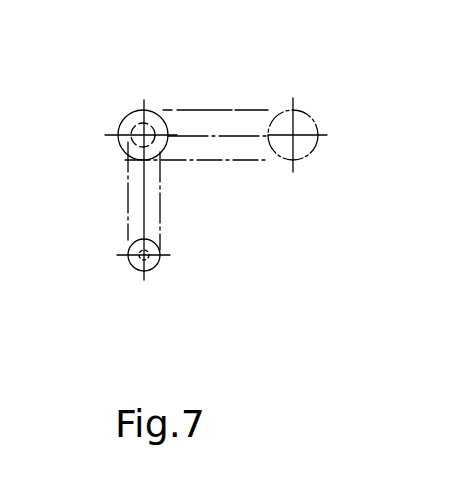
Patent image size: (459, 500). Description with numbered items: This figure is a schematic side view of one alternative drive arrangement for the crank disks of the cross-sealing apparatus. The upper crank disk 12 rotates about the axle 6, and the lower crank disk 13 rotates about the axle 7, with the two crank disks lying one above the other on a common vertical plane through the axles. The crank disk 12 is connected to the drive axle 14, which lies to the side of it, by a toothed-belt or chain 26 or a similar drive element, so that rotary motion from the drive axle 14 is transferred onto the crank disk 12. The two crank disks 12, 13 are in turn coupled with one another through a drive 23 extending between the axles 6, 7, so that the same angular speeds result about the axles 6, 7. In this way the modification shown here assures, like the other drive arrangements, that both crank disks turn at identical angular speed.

The axle 6 is at (150, 114).
The crank disk 12 is at (135, 128).
The toothed-belt or chain 26 is at (220, 108).
The drive axle 14 is at (295, 135).
The drive 23 is at (127, 204).
The crank disk 13 is at (131, 263).
The axle 7 is at (153, 260).